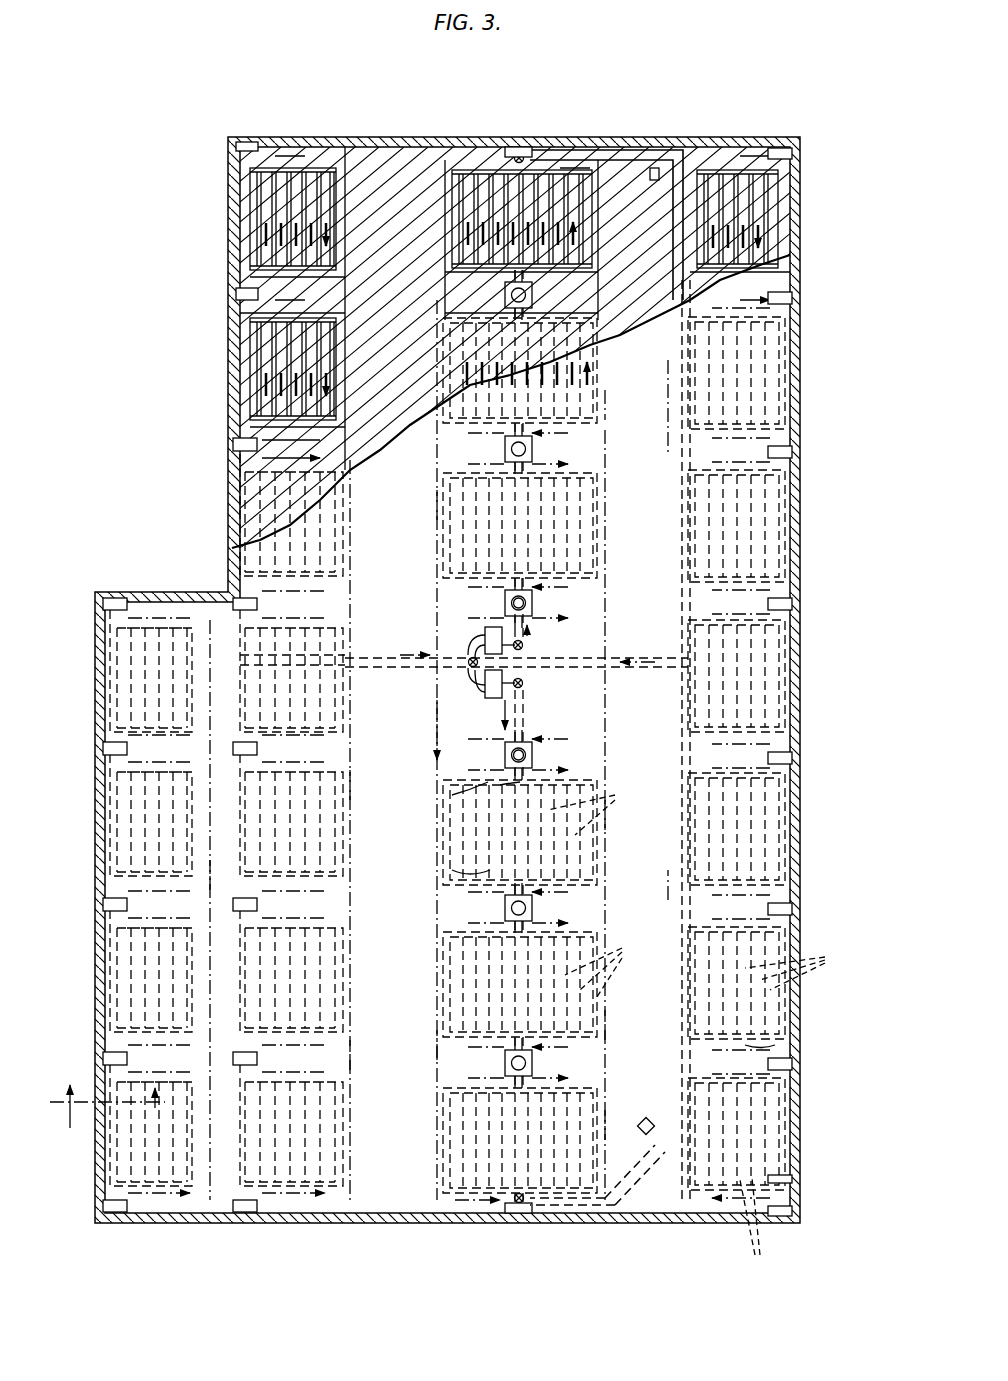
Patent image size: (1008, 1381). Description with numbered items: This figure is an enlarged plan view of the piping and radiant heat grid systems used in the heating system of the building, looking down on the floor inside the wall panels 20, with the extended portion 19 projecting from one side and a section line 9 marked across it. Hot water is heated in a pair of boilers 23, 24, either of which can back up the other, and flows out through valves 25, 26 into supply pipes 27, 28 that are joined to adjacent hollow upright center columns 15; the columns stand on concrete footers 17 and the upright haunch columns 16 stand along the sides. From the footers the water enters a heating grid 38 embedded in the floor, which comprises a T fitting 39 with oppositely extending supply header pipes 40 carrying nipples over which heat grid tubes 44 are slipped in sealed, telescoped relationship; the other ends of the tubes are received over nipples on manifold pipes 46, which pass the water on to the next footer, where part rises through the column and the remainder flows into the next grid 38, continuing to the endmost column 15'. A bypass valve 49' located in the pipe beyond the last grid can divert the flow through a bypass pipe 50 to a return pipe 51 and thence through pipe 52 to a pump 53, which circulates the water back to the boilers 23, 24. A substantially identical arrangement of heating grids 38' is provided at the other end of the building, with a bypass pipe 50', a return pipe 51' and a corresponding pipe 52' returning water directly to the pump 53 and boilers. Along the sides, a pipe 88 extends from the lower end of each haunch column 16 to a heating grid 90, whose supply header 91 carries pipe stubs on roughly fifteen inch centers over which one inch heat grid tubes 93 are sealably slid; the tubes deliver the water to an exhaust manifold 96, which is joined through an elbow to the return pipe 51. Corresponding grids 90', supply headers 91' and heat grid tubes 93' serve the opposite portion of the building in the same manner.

The section line 9- 9 is at (107, 1086).
The upright center column 15 is at (513, 677).
The endmost column 15' is at (530, 676).
The upright haunch column 16 is at (780, 152).
The concrete footer 17 is at (510, 600).
The extended portion 19 is at (93, 810).
The wall panel 20 is at (800, 820).
The boiler 23 is at (492, 700).
The boiler 24 is at (492, 628).
The valve 25 is at (523, 684).
The valve 26 is at (523, 646).
The supply pipe 27 is at (525, 718).
The supply pipe 28 is at (532, 645).
The heating grid 38 is at (546, 986).
The heating grid 38' is at (546, 374).
The T fitting 39 is at (525, 782).
The supply header pipe 40 is at (452, 795).
The heat grid tube 44 is at (599, 890).
The manifold pipe 46 is at (452, 868).
The valve 49' is at (529, 682).
The bypass pipe 50 is at (599, 1194).
The bypass pipe 50' is at (606, 197).
The return pipe 51 is at (446, 750).
The return pipe 51' is at (657, 740).
The pipe 52 is at (516, 677).
The horizontal duct 52' is at (326, 637).
The pump 53 is at (470, 664).
The pipe 88 is at (795, 168).
The heating grid 90 is at (518, 683).
The wall module 90' is at (776, 1058).
The supply header 91 is at (808, 894).
The inlet opening 91' is at (809, 1175).
The heat grid tube 93 is at (799, 964).
The coil tubes 93' is at (763, 1220).
The exhaust manifold 96 is at (762, 1047).